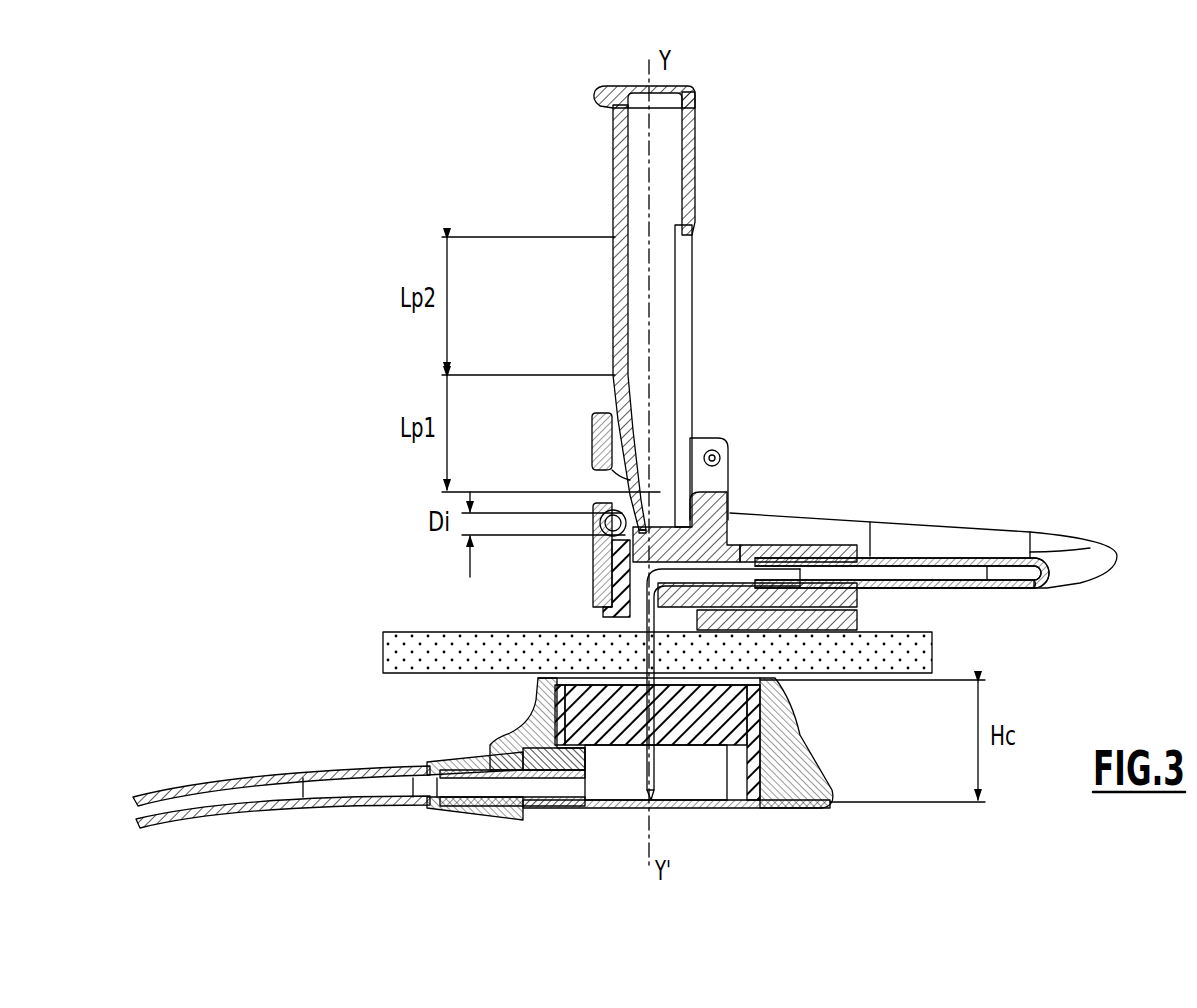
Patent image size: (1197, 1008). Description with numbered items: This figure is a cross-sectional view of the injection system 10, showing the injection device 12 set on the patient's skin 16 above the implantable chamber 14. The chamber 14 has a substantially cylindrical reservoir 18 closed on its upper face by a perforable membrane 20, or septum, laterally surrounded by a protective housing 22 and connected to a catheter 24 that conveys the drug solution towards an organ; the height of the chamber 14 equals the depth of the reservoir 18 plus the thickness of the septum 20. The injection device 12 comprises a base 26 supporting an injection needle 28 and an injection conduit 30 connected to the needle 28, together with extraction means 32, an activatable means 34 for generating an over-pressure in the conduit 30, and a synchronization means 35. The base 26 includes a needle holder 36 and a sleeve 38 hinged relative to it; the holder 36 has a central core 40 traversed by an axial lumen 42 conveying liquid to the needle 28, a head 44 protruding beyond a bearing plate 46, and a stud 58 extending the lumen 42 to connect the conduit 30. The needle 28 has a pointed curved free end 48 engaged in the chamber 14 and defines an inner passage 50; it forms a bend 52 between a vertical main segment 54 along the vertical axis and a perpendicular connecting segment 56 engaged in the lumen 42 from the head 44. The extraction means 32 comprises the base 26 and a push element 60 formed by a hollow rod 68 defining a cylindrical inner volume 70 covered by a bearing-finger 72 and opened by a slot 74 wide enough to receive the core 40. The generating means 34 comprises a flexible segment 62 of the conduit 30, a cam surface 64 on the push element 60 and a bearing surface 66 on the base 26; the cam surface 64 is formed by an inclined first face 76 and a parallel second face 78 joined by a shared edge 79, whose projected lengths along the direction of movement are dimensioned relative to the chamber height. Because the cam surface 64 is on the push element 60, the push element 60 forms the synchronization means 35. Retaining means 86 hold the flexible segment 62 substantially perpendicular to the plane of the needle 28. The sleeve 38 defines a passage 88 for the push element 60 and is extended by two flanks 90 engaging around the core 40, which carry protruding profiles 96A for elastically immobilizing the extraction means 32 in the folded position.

The injection system 10 is at (1075, 283).
The injection device 12 is at (862, 355).
The implantable chamber 14 is at (682, 763).
The skin 16 is at (905, 648).
The reservoir 18 is at (722, 790).
The perforable membrane 20 is at (762, 716).
The protective housing 22 is at (782, 762).
The catheter 24 is at (300, 800).
The base 26 is at (520, 604).
The injection needle 28 is at (636, 653).
The injection conduit 30 is at (1018, 567).
The extraction means 32 is at (760, 212).
The activatable means for generating an over-pressure 34 is at (563, 448).
The synchronization means 35 is at (697, 163).
The needle holder 36 is at (864, 601).
The sleeve 38 is at (600, 576).
The central core 40 is at (800, 545).
The axial lumen 42 is at (768, 548).
The head 44 is at (656, 512).
The bearing plate 46 is at (860, 622).
The pointed curved free end 48 is at (668, 806).
The passage 50 is at (668, 740).
The bend 52 is at (601, 578).
The main segment 54 is at (645, 640).
The connecting segment 56 is at (733, 547).
The stud 58 is at (835, 545).
The push element 60 is at (655, 290).
The flexible segment 62 is at (612, 507).
The cam surface 64 is at (609, 363).
The bearing surface 66 is at (600, 528).
The rod 68 is at (696, 185).
The cylindrical inner volume 70 is at (663, 208).
The bearing-finger 72 is at (622, 100).
The slot 74 is at (685, 312).
The first face 76 is at (598, 450).
The second face 78 is at (612, 304).
The shared edge 79 is at (611, 376).
The retaining means 86 is at (575, 498).
The passage 88 is at (612, 460).
The flanks 90 is at (713, 481).
The protruding profiles 96A is at (725, 447).